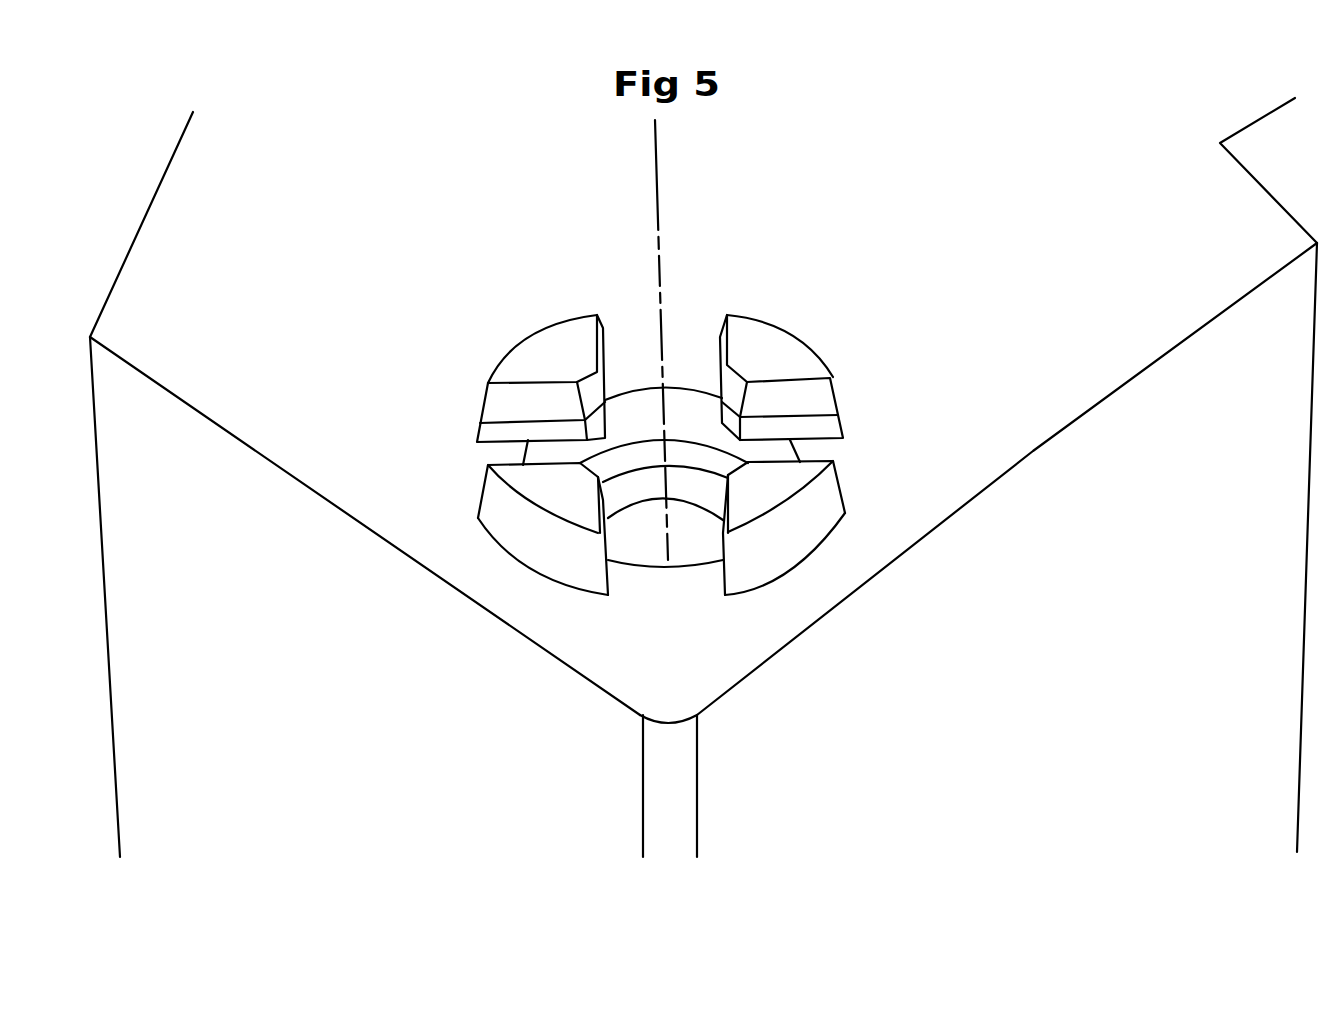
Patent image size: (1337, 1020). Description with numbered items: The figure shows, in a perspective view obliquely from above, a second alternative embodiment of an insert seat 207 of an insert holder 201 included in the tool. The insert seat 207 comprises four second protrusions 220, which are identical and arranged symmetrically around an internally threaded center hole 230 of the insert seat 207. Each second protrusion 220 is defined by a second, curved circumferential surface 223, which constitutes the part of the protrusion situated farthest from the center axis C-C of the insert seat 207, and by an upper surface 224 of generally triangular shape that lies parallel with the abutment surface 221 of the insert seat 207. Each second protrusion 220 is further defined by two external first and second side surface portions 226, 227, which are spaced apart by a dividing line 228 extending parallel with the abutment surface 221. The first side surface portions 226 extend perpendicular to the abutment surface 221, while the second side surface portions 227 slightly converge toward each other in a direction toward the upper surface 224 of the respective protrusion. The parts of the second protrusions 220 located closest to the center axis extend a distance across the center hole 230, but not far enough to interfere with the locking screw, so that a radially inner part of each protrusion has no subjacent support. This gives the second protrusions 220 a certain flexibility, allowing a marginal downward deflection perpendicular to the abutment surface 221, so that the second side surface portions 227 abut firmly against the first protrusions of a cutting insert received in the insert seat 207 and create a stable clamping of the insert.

The insert holder 201 is at (169, 148).
The insert seat 207 is at (521, 466).
The second protrusions 220 is at (817, 580).
The abutment surface 221 is at (645, 625).
The second curved circumferential surface 223 is at (845, 582).
The upper surface 224 is at (768, 490).
The first side surface portions 226 is at (492, 433).
The second side surface portions 227 is at (502, 402).
The dividing line 228 is at (480, 423).
The center hole 230 is at (697, 485).